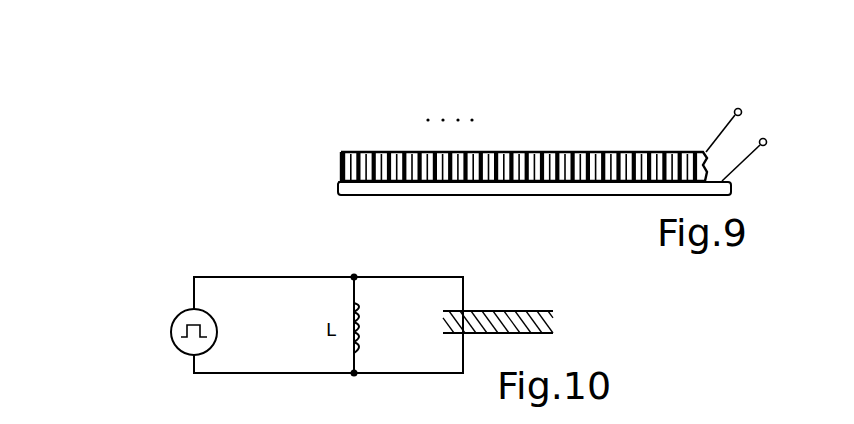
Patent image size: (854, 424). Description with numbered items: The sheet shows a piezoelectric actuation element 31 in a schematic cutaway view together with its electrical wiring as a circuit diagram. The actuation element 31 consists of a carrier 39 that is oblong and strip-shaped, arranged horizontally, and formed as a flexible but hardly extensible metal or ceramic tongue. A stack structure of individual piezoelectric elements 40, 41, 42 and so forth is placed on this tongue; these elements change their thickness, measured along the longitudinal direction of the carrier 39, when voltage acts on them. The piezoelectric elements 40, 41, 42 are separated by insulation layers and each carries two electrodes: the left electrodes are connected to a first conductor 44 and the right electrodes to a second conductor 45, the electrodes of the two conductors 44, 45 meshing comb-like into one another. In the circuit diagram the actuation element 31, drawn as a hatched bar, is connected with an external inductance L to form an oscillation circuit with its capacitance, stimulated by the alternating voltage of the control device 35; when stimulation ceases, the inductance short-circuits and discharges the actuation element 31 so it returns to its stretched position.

In FIG. 9, the actuation element 31 is at (582, 116).
In FIG. 10, the actuation element 31 is at (534, 304).
In FIG. 10, the control device 35 is at (172, 314).
In FIG. 9, the carrier 39 is at (533, 189).
In FIG. 9, the piezoelectric element 40 is at (346, 152).
In FIG. 9, the piezoelectric element 41 is at (363, 152).
In FIG. 9, the piezoelectric element 42 is at (380, 152).
In FIG. 9, the first conductor 44 is at (744, 151).
In FIG. 9, the second conductor 45 is at (714, 120).